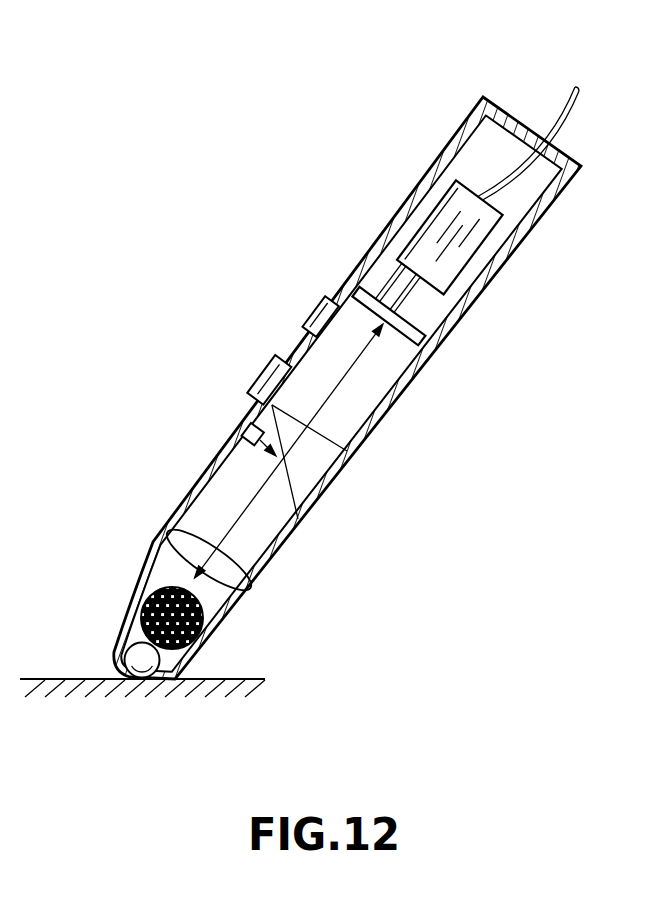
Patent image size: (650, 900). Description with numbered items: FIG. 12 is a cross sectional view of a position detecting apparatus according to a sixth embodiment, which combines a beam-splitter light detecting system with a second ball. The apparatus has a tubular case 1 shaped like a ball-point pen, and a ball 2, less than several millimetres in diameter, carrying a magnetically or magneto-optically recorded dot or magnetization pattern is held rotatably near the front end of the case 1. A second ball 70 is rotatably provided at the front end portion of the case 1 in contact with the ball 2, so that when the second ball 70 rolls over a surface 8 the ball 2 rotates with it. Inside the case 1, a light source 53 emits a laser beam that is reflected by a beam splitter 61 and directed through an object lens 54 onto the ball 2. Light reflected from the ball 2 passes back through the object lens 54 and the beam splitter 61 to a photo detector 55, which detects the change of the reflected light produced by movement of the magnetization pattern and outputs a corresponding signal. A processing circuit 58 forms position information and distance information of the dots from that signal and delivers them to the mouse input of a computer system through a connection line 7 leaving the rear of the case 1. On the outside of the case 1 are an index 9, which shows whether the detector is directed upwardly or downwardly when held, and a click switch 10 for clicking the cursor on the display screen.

The tubular case 1 is at (396, 218).
The ball 2 is at (206, 619).
The connection line 7 is at (572, 86).
The surface 8 is at (244, 679).
The index 9 is at (318, 302).
The click switch 10 is at (263, 370).
The light source 53 is at (240, 431).
The object lens 54 is at (232, 572).
The photo detector 55 is at (428, 352).
The processing circuit 58 is at (467, 240).
The beam splitter 61 is at (315, 472).
The second ball 70 is at (127, 646).